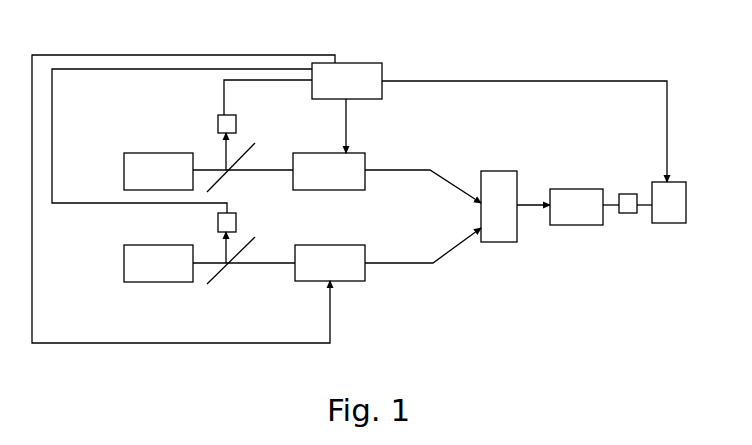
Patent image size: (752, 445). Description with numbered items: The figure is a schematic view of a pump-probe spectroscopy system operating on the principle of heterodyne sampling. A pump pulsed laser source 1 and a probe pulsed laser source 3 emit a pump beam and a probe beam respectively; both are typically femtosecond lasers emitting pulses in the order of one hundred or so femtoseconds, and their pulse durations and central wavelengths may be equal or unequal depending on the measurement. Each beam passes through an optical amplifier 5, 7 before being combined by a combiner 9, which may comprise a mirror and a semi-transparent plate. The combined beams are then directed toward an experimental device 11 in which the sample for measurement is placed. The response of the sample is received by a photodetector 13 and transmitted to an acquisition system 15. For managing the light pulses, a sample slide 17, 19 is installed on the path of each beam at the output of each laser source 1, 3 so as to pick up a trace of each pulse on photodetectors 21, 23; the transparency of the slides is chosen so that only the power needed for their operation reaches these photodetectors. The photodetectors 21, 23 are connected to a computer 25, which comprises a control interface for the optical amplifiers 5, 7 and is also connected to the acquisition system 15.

The pump pulsed laser source 1 is at (122, 152).
The probe pulsed laser source 3 is at (122, 246).
The optical amplifier 5 is at (368, 152).
The optical amplifier 7 is at (367, 245).
The combiner 9 is at (478, 172).
The experimental device 11 is at (578, 188).
The photodetector 13 is at (630, 192).
The acquisition system 15 is at (668, 226).
The sample slide 17 is at (254, 143).
The sample slide 19 is at (255, 238).
The photodetector 21 is at (238, 114).
The photodetector 23 is at (237, 212).
The computer 25 is at (383, 79).